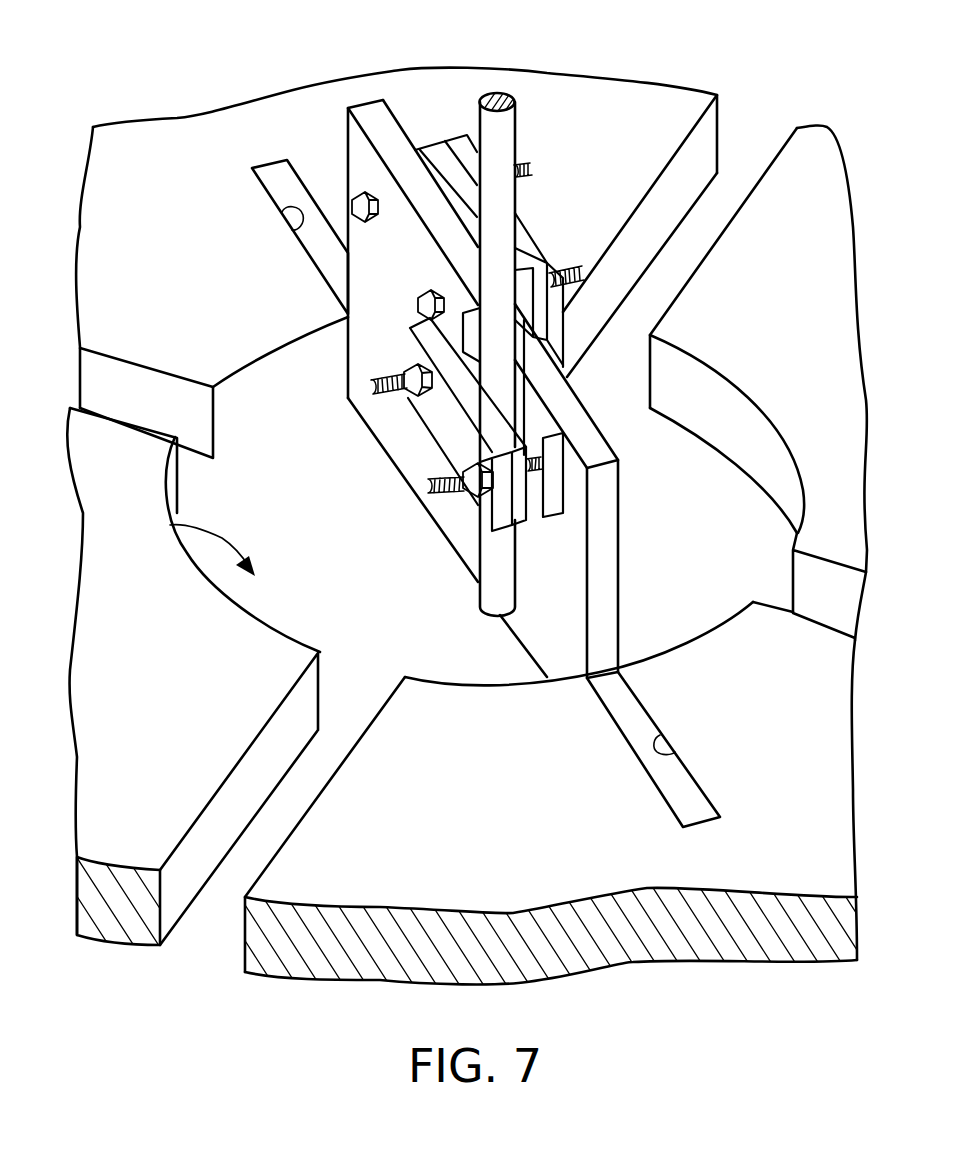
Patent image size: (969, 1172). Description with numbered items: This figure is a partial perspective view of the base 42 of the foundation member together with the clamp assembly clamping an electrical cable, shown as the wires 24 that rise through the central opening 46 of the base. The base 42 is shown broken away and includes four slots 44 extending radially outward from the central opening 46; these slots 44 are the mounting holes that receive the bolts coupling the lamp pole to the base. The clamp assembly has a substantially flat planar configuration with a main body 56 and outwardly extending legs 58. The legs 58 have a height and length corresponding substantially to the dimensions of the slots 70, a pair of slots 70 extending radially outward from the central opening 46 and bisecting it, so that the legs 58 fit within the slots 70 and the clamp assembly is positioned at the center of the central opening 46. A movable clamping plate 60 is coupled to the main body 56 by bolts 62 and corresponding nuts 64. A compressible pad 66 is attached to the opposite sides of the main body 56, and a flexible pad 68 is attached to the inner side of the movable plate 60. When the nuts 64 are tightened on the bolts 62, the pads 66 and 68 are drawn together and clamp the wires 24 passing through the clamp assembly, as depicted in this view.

The wires 24 is at (517, 110).
The base 42 is at (142, 143).
The slots 44 is at (713, 125).
The central opening 46 is at (170, 525).
The main body 56 is at (608, 547).
The legs 58 is at (273, 177).
The movable clamping plate 60 is at (447, 433).
The bolts 62 is at (353, 205).
The nuts 64 is at (410, 403).
The compressible pad 66 is at (427, 143).
The flexible pad 68 is at (437, 133).
The slots 70 is at (282, 212).